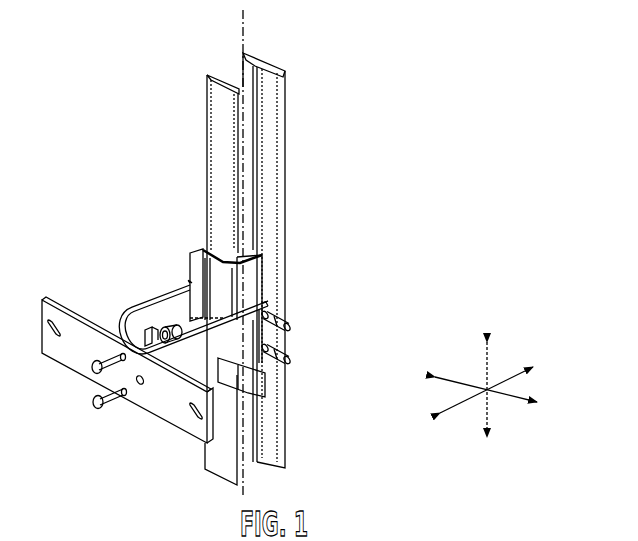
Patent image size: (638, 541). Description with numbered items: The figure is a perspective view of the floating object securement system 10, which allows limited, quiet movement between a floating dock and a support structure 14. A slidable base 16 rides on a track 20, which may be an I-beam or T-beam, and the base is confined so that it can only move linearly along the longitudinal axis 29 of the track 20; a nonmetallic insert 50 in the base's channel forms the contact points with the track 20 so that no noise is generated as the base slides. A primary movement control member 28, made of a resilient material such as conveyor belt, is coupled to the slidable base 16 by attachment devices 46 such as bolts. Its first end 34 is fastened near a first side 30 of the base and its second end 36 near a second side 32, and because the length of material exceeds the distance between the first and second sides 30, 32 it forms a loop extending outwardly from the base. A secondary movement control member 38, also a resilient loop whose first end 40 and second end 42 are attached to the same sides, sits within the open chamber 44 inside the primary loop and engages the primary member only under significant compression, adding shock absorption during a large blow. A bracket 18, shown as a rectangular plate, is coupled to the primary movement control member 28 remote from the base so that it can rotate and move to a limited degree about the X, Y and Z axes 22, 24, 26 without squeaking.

The floating object securement system 10 is at (367, 320).
The support structure 14 is at (287, 262).
The slidable base 16 is at (260, 279).
The bracket 18 is at (127, 364).
The track 20 is at (288, 190).
The X axis 22 is at (491, 388).
The Y axis 24 is at (485, 367).
The Z axis 26 is at (518, 403).
The primary movement control member 28 is at (222, 358).
The longitudinal axis 29 is at (245, 35).
The first side 30 is at (221, 292).
The second side 32 is at (272, 298).
The first end 34 is at (192, 283).
The second end 36 is at (275, 301).
The secondary movement control member 38 is at (205, 250).
The first end 40 is at (183, 305).
The second end 42 is at (268, 297).
The open chamber 44 is at (152, 317).
The attachment devices 46 is at (289, 358).
The nonmetallic insert 50 is at (252, 258).